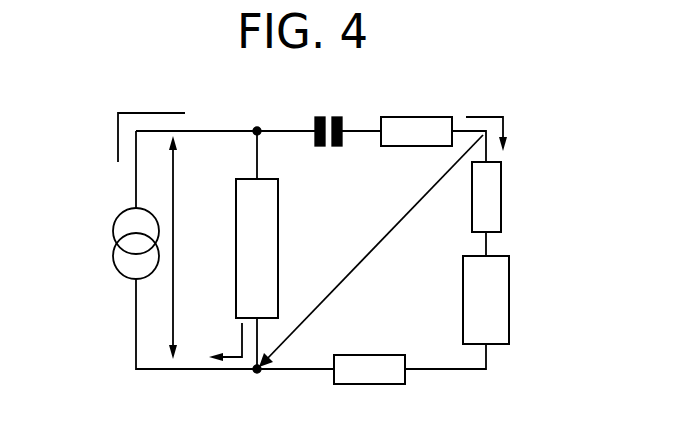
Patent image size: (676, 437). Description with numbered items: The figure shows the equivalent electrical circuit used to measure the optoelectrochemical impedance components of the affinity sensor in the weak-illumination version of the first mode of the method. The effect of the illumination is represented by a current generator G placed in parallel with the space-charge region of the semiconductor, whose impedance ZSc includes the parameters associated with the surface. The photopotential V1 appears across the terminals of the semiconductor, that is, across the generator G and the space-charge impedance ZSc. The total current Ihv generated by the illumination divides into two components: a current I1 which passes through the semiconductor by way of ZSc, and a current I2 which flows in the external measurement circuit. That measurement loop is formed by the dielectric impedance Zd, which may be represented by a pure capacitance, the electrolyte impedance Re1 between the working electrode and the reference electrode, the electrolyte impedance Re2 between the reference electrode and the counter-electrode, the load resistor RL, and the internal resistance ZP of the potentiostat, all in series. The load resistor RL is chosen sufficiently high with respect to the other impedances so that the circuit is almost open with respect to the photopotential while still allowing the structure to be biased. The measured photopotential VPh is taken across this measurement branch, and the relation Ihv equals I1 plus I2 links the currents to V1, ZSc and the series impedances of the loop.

The current generator G is at (124, 243).
The total current generated by the illumination Ihv is at (132, 137).
The photopotential across the terminals of the semiconductor V1 is at (187, 247).
The impedance of the space-charge region ZSc is at (279, 248).
The current passing through the semiconductor I1 is at (225, 340).
The impedance of the dielectric Zd is at (310, 118).
The impedance of the electrolytic solution between the working electrode and the ref Re1 is at (416, 114).
The current flowing in the measurement circuit I2 is at (498, 123).
The impedance of the electrolytic solution between the reference electrode and the c Re2 is at (513, 197).
The load resistor RL is at (503, 300).
The measured photopotential VPh is at (371, 251).
The internal resistance of the potentiostat ZP is at (369, 388).